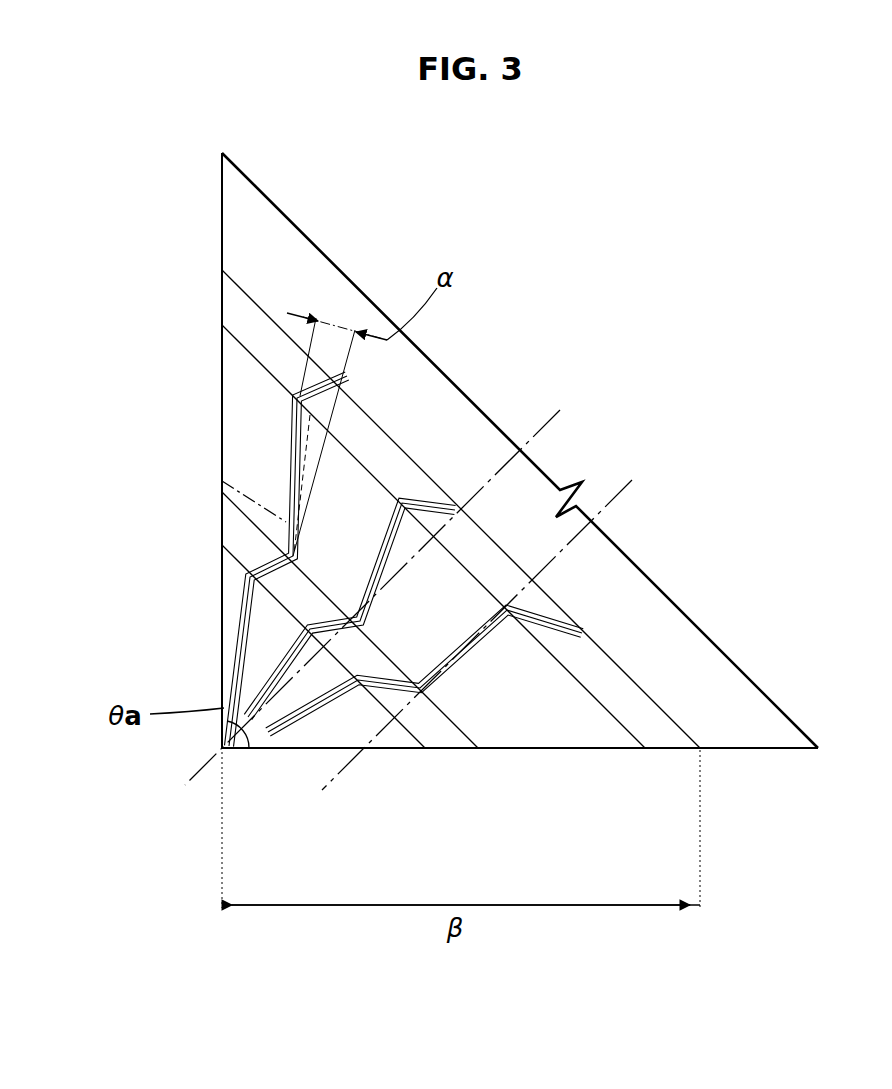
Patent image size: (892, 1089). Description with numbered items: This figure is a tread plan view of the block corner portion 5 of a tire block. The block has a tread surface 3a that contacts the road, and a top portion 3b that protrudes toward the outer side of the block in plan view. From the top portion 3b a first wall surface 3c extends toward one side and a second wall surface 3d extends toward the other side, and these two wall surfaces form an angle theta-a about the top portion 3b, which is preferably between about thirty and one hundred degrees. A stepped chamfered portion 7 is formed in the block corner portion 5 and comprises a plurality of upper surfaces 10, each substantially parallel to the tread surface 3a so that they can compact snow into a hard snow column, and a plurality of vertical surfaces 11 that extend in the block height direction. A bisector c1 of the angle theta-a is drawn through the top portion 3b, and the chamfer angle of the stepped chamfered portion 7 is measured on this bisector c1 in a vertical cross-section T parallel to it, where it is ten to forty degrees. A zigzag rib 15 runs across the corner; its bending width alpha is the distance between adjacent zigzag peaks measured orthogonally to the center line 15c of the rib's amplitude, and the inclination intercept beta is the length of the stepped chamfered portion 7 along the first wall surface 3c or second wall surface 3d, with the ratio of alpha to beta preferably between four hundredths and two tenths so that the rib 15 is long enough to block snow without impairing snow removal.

The block corner portion 5 is at (185, 291).
The tread surface 3a is at (300, 278).
The top portion 3b is at (235, 753).
The first wall surface 3c is at (543, 750).
The second wall surface 3d is at (222, 405).
The stepped chamfered portion 7 is at (437, 772).
The upper surface 10 is at (240, 613).
The vertical surface 11 is at (240, 535).
The rib 15 is at (245, 592).
The center line of the amplitude of the rib 15c is at (222, 481).
The bisector c1 is at (540, 429).
The vertical cross-section T is at (615, 497).